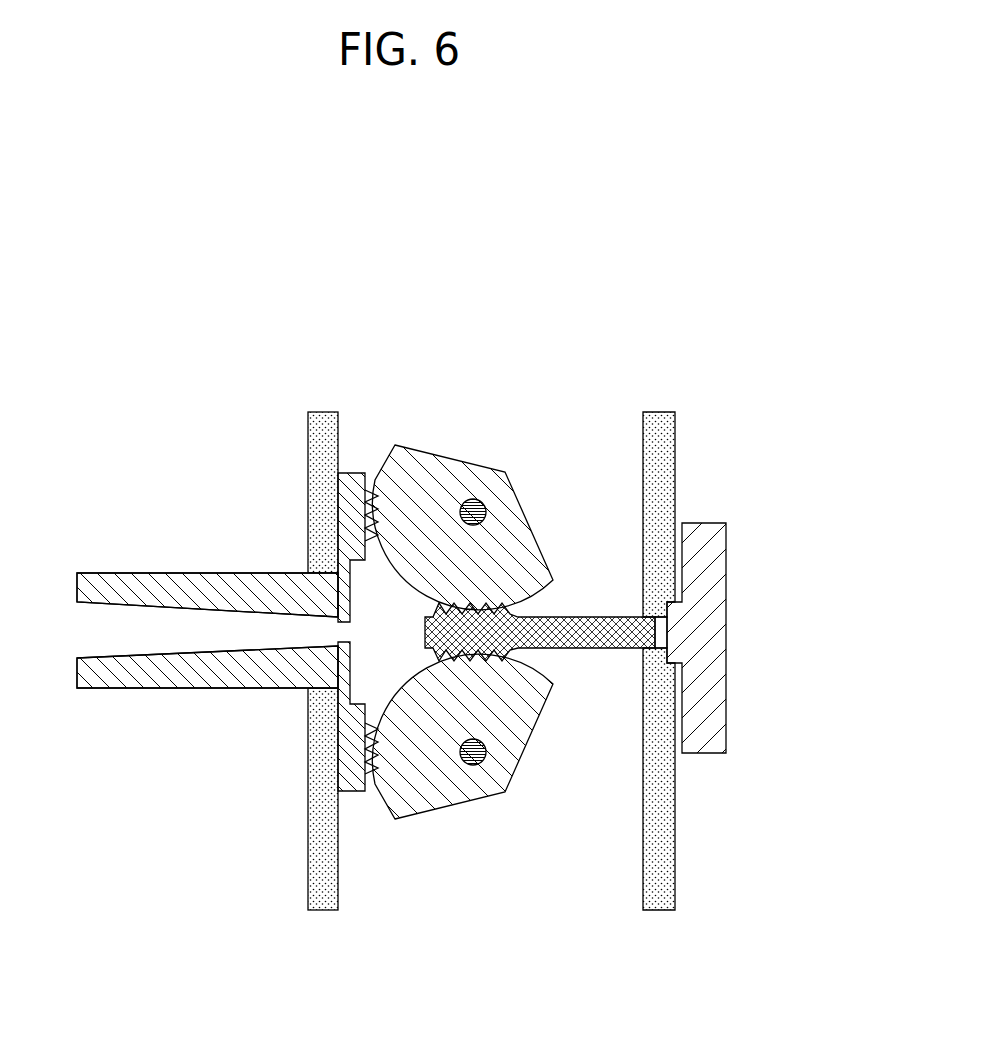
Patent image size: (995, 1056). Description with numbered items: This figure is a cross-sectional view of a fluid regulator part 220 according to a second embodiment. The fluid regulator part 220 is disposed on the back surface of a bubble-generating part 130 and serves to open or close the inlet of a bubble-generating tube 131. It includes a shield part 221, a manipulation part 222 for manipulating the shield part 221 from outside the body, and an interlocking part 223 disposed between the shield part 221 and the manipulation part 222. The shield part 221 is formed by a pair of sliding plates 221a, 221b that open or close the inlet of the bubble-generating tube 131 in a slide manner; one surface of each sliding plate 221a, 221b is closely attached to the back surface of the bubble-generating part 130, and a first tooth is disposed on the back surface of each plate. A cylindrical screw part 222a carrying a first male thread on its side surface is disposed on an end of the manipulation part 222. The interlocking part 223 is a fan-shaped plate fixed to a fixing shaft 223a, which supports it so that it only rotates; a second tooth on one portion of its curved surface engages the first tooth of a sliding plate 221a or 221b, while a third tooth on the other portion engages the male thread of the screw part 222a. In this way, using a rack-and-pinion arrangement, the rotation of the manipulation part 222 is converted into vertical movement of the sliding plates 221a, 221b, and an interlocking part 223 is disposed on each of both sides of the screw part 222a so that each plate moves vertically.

The bubble-generating part 130 is at (291, 432).
The bubble-generating tube 131 is at (128, 572).
The fluid regulator part 220 is at (697, 340).
The shield part 221 is at (316, 608).
The sliding plate 221a is at (348, 482).
The sliding plate 221b is at (350, 792).
The manipulation part 222 is at (703, 522).
The screw part 222a is at (597, 650).
The interlocking part 223 is at (487, 582).
The fixing shaft 223a is at (487, 506).